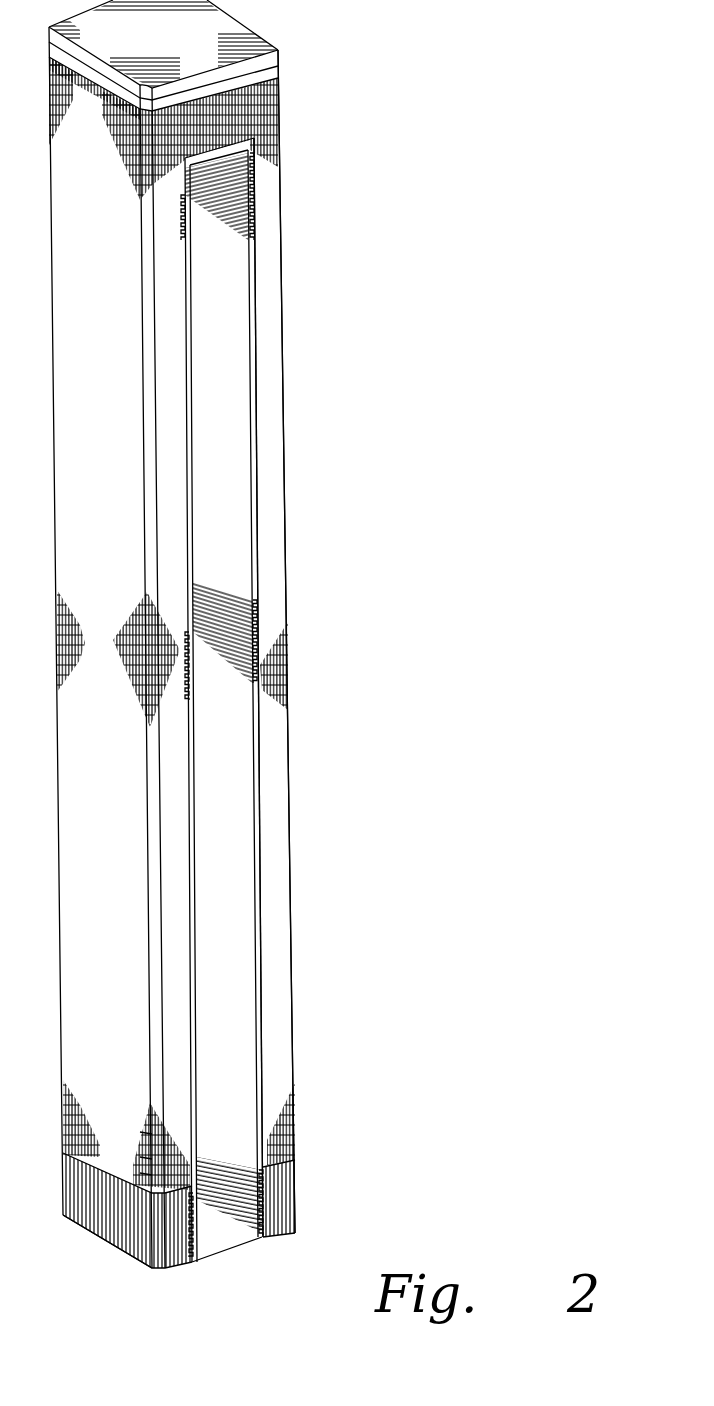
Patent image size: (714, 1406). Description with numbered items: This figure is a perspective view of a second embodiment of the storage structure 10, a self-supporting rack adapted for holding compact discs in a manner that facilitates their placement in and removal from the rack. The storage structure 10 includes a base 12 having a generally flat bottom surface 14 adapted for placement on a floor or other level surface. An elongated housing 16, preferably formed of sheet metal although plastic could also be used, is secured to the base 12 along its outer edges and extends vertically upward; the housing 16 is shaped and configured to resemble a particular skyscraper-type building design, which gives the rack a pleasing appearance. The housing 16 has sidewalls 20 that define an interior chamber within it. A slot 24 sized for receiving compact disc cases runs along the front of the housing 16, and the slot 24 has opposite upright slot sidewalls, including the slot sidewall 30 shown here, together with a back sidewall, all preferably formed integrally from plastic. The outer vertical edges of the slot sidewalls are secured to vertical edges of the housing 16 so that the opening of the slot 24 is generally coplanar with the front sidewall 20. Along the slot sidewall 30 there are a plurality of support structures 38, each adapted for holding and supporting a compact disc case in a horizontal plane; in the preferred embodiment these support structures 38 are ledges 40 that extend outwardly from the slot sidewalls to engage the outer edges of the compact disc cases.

The storage structure 10 is at (307, 87).
The base 12 is at (213, 1230).
The bottom surface 14 is at (282, 1237).
The housing 16 is at (287, 557).
The sidewalls 20 is at (270, 468).
The slot 24 is at (222, 365).
The slot sidewall 30 is at (232, 412).
The support structures 38 is at (248, 222).
The ledges 40 is at (252, 614).